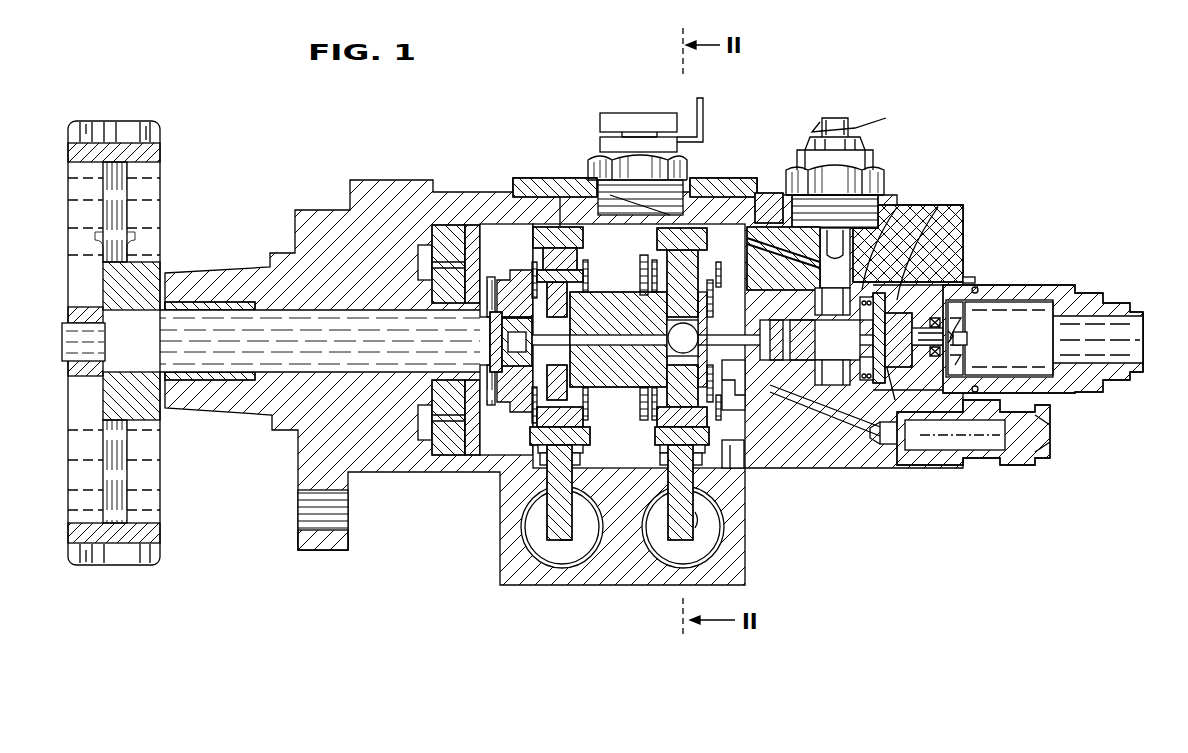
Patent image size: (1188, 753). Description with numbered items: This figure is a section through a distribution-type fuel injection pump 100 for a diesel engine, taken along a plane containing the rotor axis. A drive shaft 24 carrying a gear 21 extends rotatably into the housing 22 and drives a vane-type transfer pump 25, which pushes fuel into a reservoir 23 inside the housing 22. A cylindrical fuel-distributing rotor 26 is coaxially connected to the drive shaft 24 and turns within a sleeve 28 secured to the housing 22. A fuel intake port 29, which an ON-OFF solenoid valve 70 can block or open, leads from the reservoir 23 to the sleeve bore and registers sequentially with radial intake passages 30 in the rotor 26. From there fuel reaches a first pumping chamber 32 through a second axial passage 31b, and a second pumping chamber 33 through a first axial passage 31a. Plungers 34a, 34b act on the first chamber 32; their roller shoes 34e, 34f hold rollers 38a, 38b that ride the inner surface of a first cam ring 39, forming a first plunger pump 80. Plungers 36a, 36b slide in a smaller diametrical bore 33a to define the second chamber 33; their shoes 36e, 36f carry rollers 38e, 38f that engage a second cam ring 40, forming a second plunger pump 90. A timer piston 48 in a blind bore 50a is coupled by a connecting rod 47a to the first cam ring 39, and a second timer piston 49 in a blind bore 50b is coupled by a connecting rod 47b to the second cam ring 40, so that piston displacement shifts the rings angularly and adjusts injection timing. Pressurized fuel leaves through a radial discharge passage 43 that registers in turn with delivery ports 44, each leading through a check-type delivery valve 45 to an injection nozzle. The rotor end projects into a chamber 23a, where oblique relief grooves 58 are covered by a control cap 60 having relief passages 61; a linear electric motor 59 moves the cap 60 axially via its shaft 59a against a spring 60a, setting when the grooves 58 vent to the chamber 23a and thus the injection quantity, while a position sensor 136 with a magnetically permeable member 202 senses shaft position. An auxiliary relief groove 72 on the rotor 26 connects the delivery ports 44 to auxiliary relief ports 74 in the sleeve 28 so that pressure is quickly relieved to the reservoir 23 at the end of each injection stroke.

The distribution-type fuel injection pump 100 is at (318, 186).
The gear 21 is at (160, 150).
The housing 22 is at (378, 196).
The fuel reservoir 23 is at (430, 478).
The chamber 23a is at (970, 278).
The drive shaft 24 is at (258, 330).
The vane-type transfer pump 25 is at (445, 225).
The fuel-distributing rotor 26 is at (610, 450).
The sleeve 28 is at (905, 270).
The fuel intake port 29 is at (890, 280).
The radial fuel intake passages 30 is at (835, 400).
The first axial passage 31a is at (656, 262).
The second axial passage 31b is at (835, 440).
The first pumping chamber 32 is at (600, 365).
The second pumping chamber 33 is at (495, 352).
The diametrical bore 33a is at (582, 300).
The plunger 34a is at (690, 235).
The plunger 34b is at (652, 410).
The roller shoe 34e is at (712, 232).
The roller shoe 34f is at (740, 470).
The plunger 36a is at (482, 270).
The plunger 36b is at (548, 410).
The roller shoe 36e is at (530, 192).
The roller shoe 36f is at (530, 452).
The roller 38a is at (700, 200).
The roller 38b is at (712, 470).
The roller 38e is at (555, 228).
The roller 38f is at (536, 488).
The first cam ring 39 is at (700, 175).
The second cam ring 40 is at (572, 230).
The radial fuel discharge passage 43 is at (778, 300).
The fuel delivery ports 44 is at (873, 385).
The delivery valve 45 is at (900, 372).
The connecting rod 47a is at (700, 518).
The connecting rod 47b is at (560, 525).
The timer piston 48 is at (700, 535).
The second timer piston 49 is at (575, 548).
The blind bore 50a is at (735, 570).
The blind bore 50b is at (530, 538).
The relief grooves 58 is at (968, 282).
The linear electric motor 59 is at (1030, 305).
The motor shaft 59a is at (970, 340).
The control cap 60 is at (962, 315).
The spring 60a is at (890, 450).
The relief passages 61 is at (960, 282).
The ON-OFF solenoid valve 70 is at (845, 170).
The auxiliary relief groove 72 is at (716, 300).
The auxiliary relief ports 74 is at (726, 392).
The first plunger pump 80 is at (640, 190).
The second plunger pump 90 is at (596, 160).
The position sensor 136 is at (1060, 330).
The magnetically permeable member 202 is at (1035, 365).